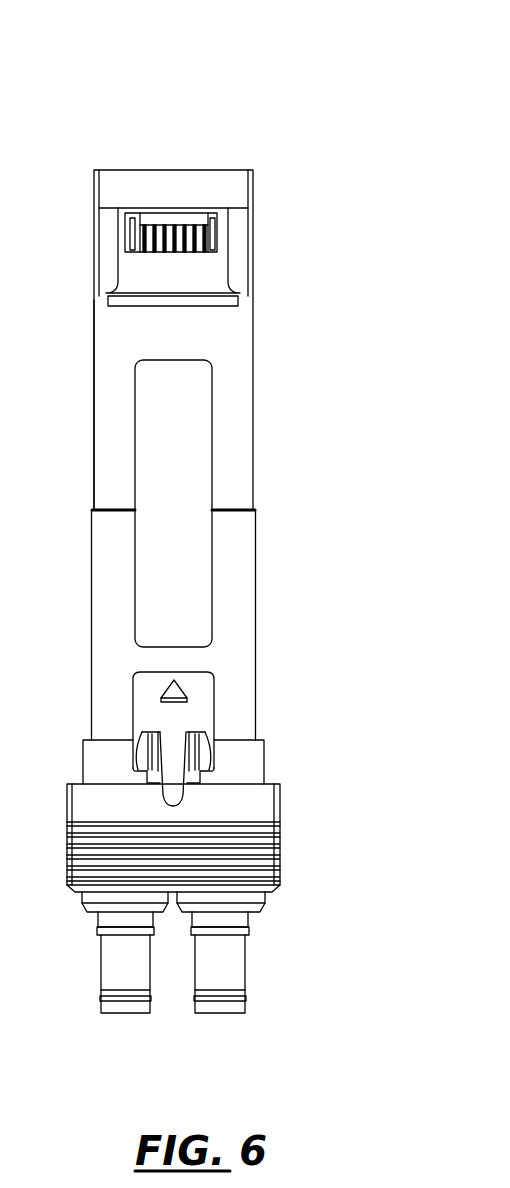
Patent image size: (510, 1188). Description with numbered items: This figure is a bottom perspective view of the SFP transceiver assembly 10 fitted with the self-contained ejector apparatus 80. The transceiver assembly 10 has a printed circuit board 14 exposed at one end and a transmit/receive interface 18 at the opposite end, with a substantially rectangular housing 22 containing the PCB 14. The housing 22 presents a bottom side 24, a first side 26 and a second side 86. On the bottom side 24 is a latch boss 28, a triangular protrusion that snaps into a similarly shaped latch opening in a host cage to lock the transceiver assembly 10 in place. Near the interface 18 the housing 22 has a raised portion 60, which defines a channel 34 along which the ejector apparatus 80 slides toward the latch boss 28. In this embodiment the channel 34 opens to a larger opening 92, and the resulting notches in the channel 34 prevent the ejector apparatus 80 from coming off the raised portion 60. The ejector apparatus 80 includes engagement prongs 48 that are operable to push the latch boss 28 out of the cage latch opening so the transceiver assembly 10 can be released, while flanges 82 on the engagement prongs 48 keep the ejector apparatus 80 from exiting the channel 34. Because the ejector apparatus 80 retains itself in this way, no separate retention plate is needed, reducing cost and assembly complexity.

The SFP transceiver assembly 10 is at (187, 518).
The printed circuit board 14 is at (215, 272).
The transmit/receive interface 18 is at (270, 973).
The housing 22 is at (268, 357).
The bottom side 24 is at (237, 468).
The first side 26 is at (257, 537).
The latch boss 28 is at (173, 697).
The channel 34 is at (173, 711).
The engagement prongs 48 is at (197, 744).
The raised portion 60 is at (260, 766).
The self-contained ejector apparatus 80 is at (280, 803).
The flanges 82 is at (208, 754).
The second side 86 is at (93, 479).
The larger opening 92 is at (150, 681).